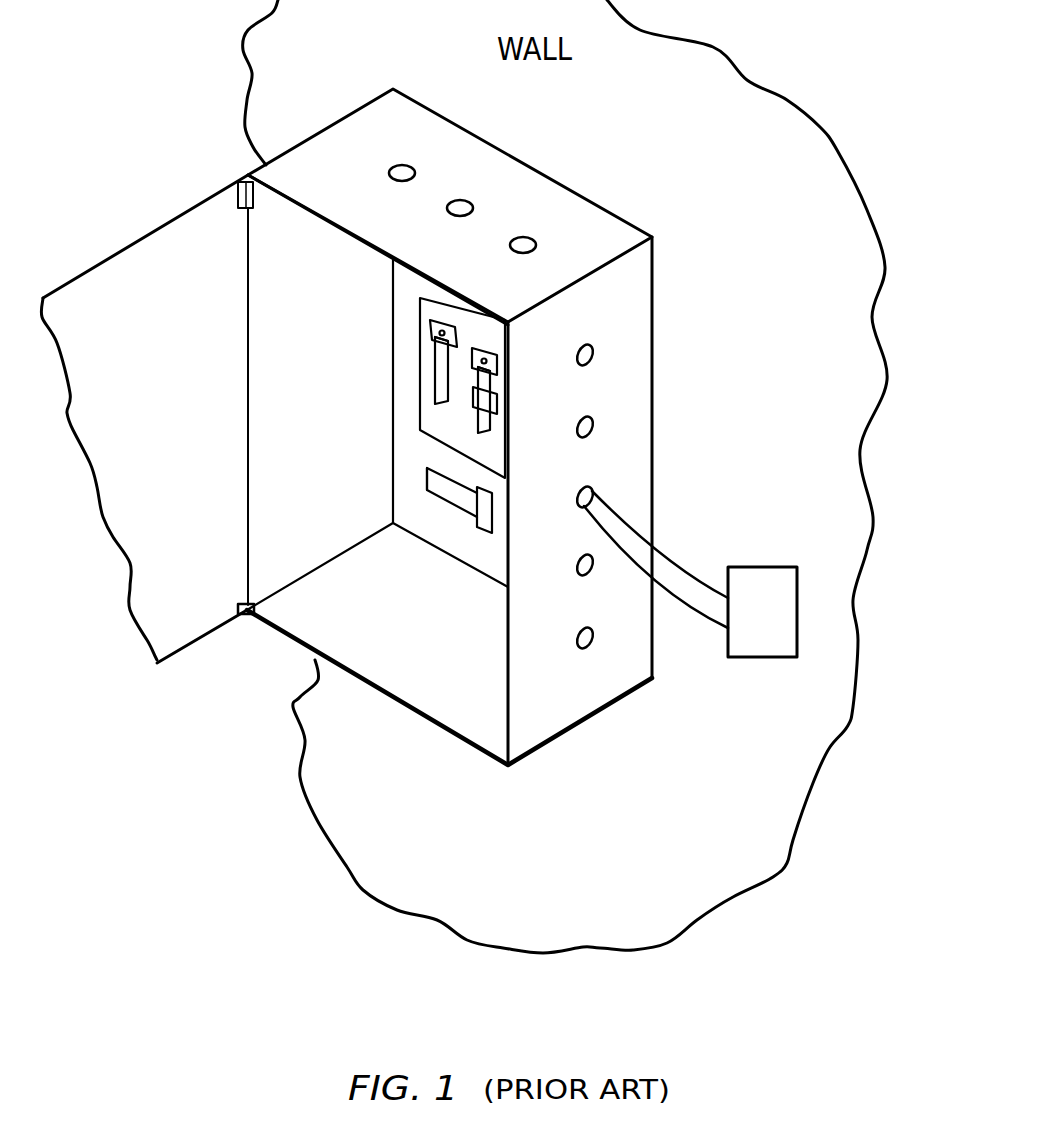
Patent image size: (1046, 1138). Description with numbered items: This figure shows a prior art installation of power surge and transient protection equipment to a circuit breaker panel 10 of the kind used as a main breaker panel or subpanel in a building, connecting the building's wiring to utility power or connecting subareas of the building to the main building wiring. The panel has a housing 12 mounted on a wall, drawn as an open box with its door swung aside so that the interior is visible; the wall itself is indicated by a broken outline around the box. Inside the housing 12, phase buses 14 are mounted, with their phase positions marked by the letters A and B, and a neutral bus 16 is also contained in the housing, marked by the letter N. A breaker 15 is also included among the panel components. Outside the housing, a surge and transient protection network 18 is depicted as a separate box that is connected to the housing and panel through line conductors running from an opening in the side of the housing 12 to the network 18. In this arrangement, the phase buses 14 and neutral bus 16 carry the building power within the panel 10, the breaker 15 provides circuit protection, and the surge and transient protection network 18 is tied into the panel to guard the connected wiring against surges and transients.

The circuit breaker panel 10 is at (572, 148).
The housing 12 is at (212, 192).
The phase buses 14 is at (484, 359).
The breaker 15 is at (475, 400).
The neutral bus 16 is at (467, 503).
The surge and transient protection network 18 is at (742, 643).
The phase A bus A is at (447, 375).
The phase B bus B is at (487, 388).
The neutral bus N is at (440, 487).